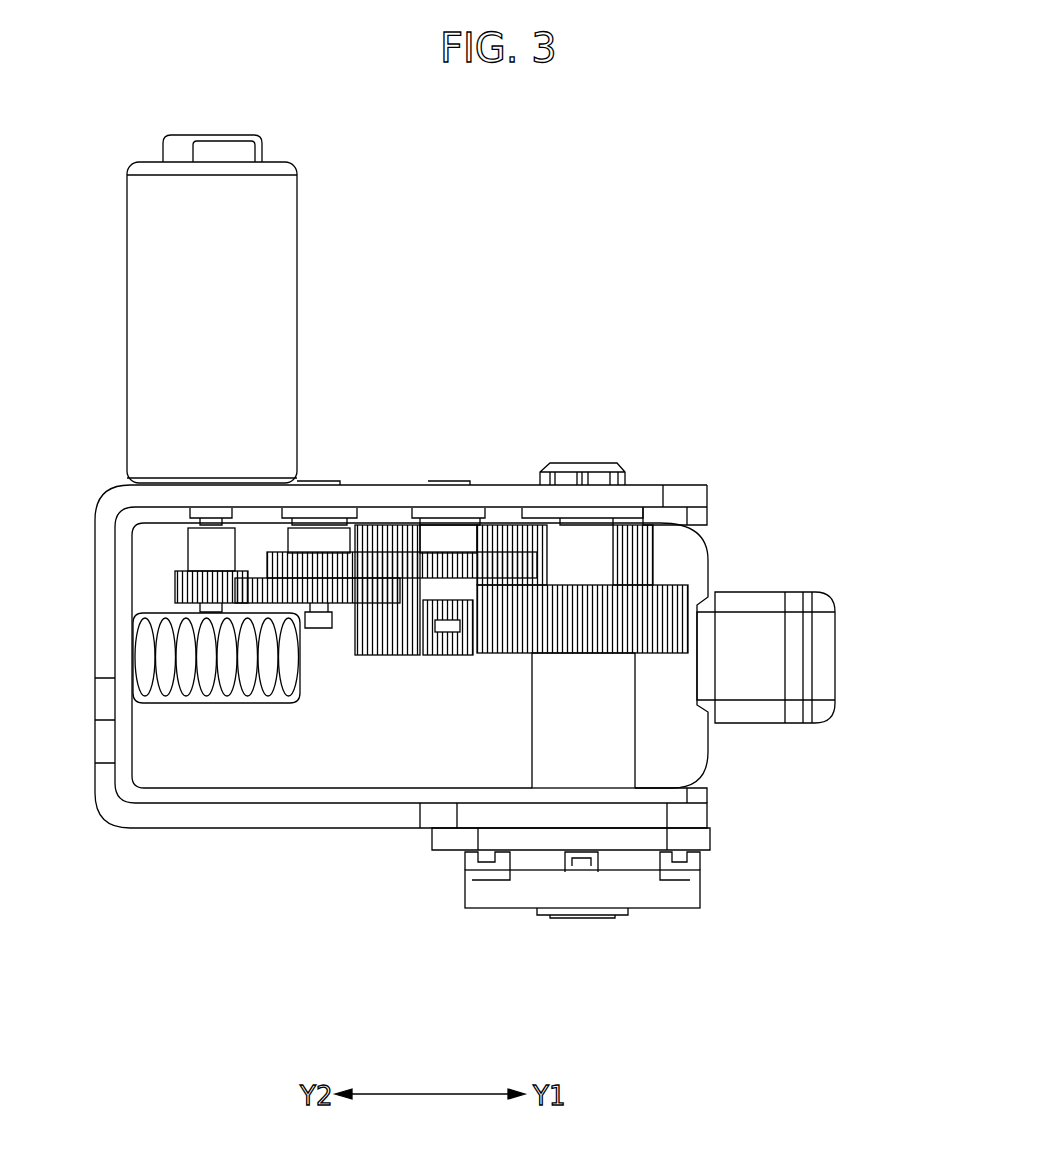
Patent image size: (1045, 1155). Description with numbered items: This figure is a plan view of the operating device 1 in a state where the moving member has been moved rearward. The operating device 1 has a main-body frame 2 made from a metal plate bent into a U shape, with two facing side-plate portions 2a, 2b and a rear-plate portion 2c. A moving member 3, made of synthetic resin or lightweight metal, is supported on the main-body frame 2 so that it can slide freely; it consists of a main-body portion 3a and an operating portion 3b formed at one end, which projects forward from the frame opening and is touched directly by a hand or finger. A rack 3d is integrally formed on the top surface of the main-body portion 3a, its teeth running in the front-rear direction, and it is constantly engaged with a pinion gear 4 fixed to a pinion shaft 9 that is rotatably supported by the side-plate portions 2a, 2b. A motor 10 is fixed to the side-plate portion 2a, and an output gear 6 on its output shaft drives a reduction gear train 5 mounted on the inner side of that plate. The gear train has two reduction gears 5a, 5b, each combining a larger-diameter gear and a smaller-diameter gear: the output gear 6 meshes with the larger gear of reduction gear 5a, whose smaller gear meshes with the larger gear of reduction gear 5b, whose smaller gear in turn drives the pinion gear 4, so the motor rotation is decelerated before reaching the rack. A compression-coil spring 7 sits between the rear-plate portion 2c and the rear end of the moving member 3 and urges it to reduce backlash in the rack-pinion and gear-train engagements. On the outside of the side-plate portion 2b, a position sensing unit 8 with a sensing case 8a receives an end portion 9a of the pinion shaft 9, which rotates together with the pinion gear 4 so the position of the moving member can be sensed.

The operating device 1 is at (610, 232).
The main-body frame 2 is at (390, 658).
The side-plate portion 2a is at (508, 497).
The side-plate portion 2b is at (373, 812).
The rear-plate portion 2c is at (98, 585).
The moving member 3 is at (519, 685).
The main-body portion 3a is at (690, 748).
The operating portion 3b is at (820, 655).
The rack 3d is at (648, 565).
The pinion gear 4 is at (668, 653).
The reduction gear train 5 is at (391, 657).
The reduction gear 5a is at (373, 562).
The reduction gear 5b is at (515, 590).
The output gear 6 is at (165, 583).
The compression-coil spring 7 is at (240, 690).
The position sensing unit 8 is at (571, 922).
The sensing case 8a is at (652, 893).
The pinion shaft 9 is at (615, 762).
The end portion 9a is at (593, 915).
The motor 10 is at (275, 240).